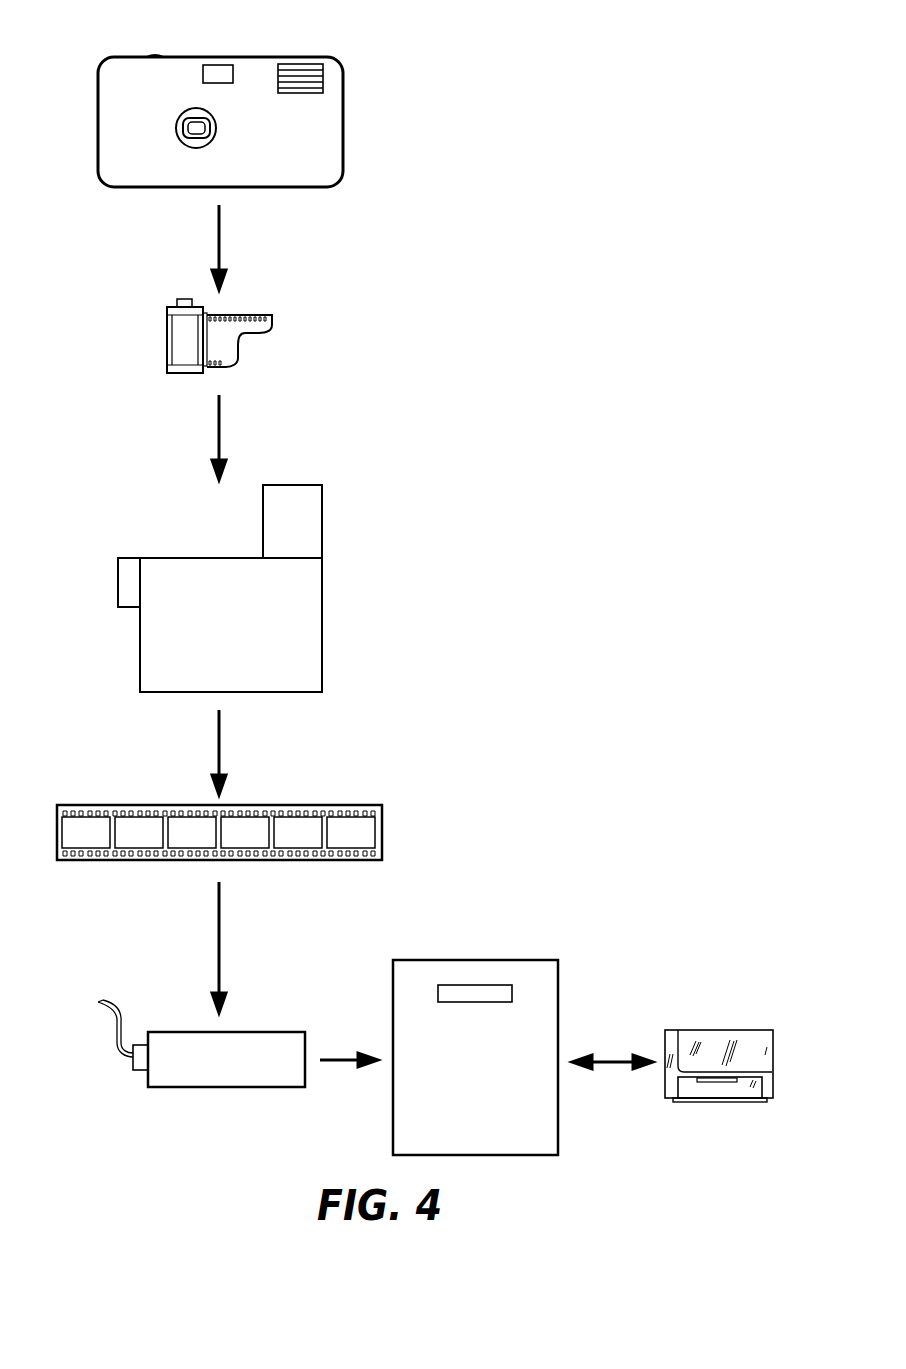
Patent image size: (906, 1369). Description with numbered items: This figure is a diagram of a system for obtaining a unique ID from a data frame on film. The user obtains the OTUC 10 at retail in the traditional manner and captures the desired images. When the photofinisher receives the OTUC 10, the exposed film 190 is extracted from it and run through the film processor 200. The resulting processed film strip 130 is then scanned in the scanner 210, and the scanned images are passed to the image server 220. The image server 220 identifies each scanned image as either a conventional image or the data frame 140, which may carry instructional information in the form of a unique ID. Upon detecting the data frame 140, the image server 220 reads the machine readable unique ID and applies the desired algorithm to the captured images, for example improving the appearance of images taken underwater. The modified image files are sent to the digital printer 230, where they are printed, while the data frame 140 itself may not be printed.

The OTUC 10 is at (343, 118).
The exposed film 190 is at (272, 316).
The film processor 200 is at (322, 515).
The processed film strip 130 is at (382, 828).
The data frame 140 is at (315, 828).
The scanner 210 is at (273, 1032).
The image server 220 is at (522, 960).
The digital printer 230 is at (748, 1030).